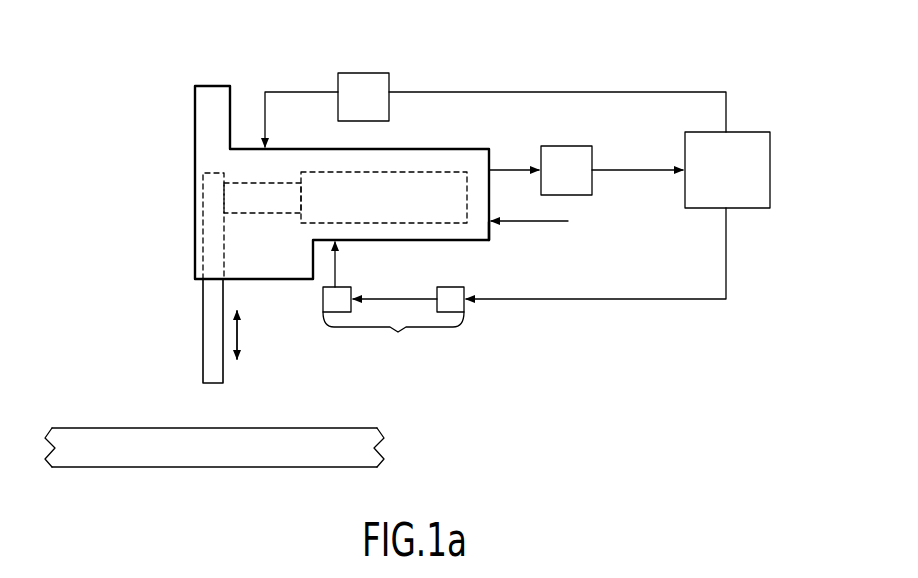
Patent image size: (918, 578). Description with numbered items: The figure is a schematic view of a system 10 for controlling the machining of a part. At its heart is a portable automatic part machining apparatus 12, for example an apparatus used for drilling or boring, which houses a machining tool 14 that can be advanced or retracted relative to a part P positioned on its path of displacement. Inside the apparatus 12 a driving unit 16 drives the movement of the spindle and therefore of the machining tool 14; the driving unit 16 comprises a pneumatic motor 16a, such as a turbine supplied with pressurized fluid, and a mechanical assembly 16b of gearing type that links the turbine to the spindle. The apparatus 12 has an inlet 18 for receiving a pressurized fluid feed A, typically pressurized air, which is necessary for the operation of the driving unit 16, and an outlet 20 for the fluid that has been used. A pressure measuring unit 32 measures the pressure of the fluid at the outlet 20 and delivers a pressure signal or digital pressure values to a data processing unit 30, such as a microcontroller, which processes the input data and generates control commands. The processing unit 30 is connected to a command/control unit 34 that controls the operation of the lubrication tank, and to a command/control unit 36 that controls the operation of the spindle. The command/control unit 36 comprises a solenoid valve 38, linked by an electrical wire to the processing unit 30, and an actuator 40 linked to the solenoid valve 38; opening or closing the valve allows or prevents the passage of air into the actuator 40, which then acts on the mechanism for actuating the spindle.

The system for controlling the machining of a part 10 is at (616, 78).
The portable automatic part machining apparatus 12 is at (188, 164).
The machining tool 14 is at (198, 362).
The driving unit 16 is at (284, 236).
The pneumatic motor 16a is at (402, 213).
The mechanical assembly 16b is at (282, 210).
The inlet 18 is at (491, 227).
The outlet 20 is at (490, 166).
The data processing unit 30 is at (739, 181).
The pressure measuring unit 32 is at (578, 180).
The command/control unit 34 is at (375, 107).
The command/control unit 36 is at (393, 339).
The solenoid valve 38 is at (450, 287).
The actuator 40 is at (345, 287).
The pressurized fluid feed A is at (540, 222).
The part P is at (134, 468).